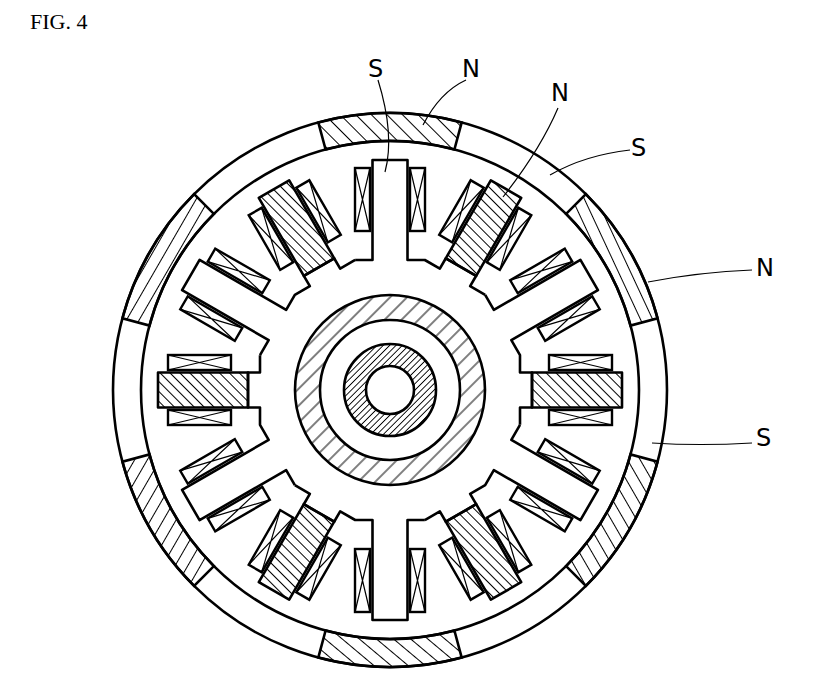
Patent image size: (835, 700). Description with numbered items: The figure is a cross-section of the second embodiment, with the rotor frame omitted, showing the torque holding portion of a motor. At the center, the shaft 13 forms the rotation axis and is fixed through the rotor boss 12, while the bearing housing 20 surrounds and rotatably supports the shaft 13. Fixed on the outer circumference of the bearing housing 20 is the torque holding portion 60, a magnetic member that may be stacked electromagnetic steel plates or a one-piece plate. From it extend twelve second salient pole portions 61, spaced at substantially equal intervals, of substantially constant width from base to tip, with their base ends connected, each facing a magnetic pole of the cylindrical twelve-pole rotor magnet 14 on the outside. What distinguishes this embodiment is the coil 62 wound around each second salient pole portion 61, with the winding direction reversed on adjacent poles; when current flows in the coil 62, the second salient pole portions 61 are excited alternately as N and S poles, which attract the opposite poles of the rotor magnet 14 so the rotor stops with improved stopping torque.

The rotor boss 12 is at (348, 367).
The shaft 13 is at (377, 395).
The rotor magnet 14 is at (660, 527).
The bearing housing 20 is at (335, 328).
The torque holding portion 60 is at (420, 620).
The second salient pole portion 61 is at (580, 507).
The coil 62 is at (200, 428).